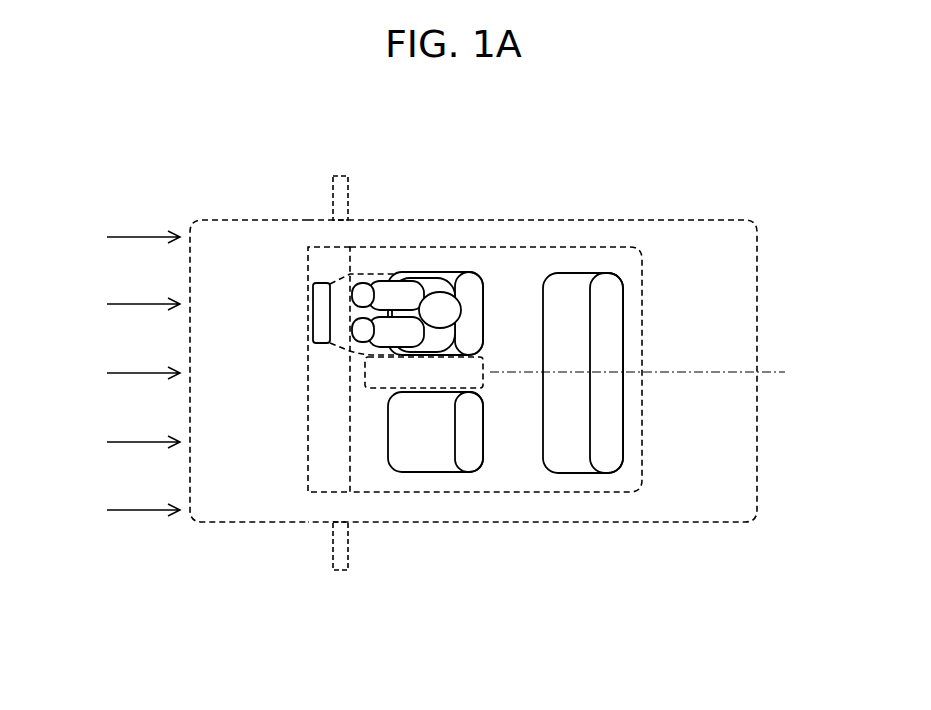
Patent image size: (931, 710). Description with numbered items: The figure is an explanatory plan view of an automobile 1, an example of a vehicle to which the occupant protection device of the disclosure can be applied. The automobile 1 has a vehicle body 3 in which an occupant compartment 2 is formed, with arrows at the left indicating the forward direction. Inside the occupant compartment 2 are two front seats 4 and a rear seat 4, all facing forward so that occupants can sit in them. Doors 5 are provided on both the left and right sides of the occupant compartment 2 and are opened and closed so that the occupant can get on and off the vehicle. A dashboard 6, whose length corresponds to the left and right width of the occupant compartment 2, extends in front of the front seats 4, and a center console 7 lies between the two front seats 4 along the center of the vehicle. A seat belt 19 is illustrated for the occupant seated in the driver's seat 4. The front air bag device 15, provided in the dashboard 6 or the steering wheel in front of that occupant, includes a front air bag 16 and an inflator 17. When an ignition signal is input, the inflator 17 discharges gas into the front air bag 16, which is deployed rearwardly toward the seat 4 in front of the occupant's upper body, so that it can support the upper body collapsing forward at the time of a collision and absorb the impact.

The automobile 1 is at (473, 315).
The occupant compartment 2 is at (522, 242).
The vehicle body 3 is at (236, 233).
The seat 4 is at (468, 290).
The door 5 is at (383, 235).
The dashboard 6 is at (328, 455).
The center console 7 is at (647, 371).
The front air bag device 15 is at (328, 237).
The front air bag 16 is at (345, 277).
The inflator 17 is at (321, 290).
The seat belt 19 is at (430, 296).